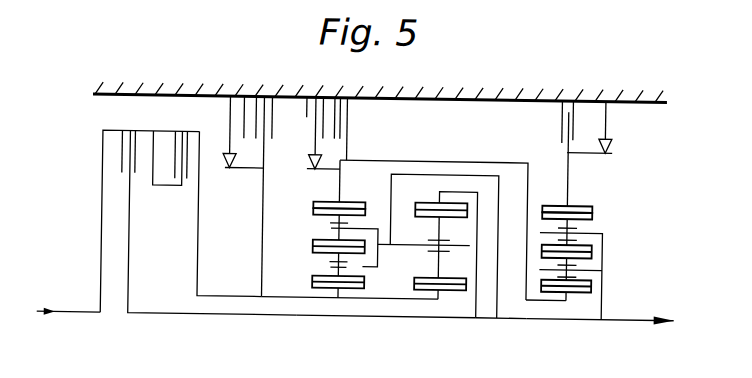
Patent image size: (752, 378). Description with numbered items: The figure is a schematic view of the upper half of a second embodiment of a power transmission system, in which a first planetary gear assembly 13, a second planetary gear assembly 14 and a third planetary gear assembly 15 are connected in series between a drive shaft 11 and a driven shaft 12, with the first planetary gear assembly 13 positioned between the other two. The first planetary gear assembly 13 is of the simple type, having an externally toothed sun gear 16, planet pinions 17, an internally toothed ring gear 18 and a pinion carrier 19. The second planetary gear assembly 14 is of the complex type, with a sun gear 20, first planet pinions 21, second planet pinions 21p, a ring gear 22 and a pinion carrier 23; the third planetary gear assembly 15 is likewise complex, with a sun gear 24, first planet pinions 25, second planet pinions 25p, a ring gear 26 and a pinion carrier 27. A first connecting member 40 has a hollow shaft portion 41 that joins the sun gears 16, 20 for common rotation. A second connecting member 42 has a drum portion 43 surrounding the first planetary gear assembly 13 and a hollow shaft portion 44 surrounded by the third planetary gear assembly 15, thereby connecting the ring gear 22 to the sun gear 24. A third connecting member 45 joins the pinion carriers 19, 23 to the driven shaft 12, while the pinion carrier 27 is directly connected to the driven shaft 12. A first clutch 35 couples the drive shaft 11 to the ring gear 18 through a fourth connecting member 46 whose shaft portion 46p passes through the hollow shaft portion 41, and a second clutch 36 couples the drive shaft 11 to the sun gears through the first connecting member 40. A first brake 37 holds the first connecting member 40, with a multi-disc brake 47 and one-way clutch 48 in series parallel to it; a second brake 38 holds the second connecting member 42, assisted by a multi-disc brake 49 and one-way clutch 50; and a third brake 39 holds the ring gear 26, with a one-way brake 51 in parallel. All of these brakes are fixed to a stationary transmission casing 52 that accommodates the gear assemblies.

The drive shaft 11 is at (76, 317).
The driven shaft 12 is at (640, 315).
The first planetary gear assembly 13 is at (456, 293).
The second planetary gear assembly 14 is at (308, 289).
The third planetary gear assembly 15 is at (575, 293).
The sun gear 16 is at (427, 293).
The planet pinions 17 is at (423, 213).
The ring gear 18 is at (432, 198).
The pinion carrier 19 is at (421, 285).
The sun gear 20 is at (316, 282).
The first planet pinions 21 is at (315, 245).
The second planet pinions 21p is at (315, 210).
The ring gear 22 is at (324, 199).
The pinion carrier 23 is at (387, 260).
The sun gear 24 is at (583, 285).
The first planet pinions 25 is at (594, 244).
The second planet pinions 25p is at (594, 208).
The ring gear 26 is at (594, 200).
The pinion carrier 27 is at (595, 280).
The first clutch 35 is at (123, 173).
The second clutch 36 is at (187, 179).
The first brake 37 is at (277, 197).
The second brake 38 is at (350, 121).
The third brake 39 is at (562, 120).
The first connecting member 40 is at (203, 276).
The hollow shaft portion 41 is at (386, 294).
The second connecting member 42 is at (528, 190).
The drum portion 43 is at (491, 159).
The hollow shaft portion 44 is at (551, 295).
The third connecting member 45 is at (519, 316).
The fourth connecting member 46 is at (233, 311).
The shaft portion 46p is at (333, 311).
The multi-disc brake 47 is at (229, 110).
The one-way clutch 48 is at (229, 168).
The multi-disc brake 49 is at (306, 113).
The one-way clutch 50 is at (313, 164).
The one-way brake 51 is at (614, 137).
The stationary transmission casing 52 is at (412, 97).